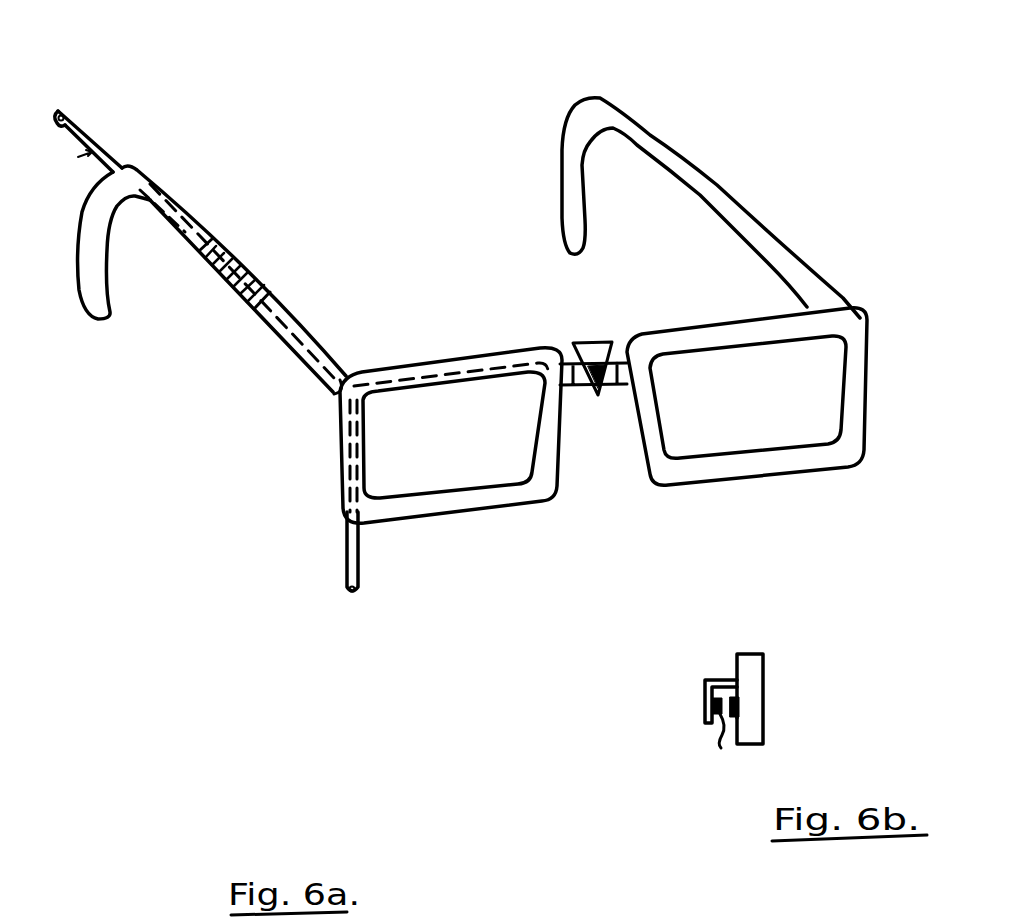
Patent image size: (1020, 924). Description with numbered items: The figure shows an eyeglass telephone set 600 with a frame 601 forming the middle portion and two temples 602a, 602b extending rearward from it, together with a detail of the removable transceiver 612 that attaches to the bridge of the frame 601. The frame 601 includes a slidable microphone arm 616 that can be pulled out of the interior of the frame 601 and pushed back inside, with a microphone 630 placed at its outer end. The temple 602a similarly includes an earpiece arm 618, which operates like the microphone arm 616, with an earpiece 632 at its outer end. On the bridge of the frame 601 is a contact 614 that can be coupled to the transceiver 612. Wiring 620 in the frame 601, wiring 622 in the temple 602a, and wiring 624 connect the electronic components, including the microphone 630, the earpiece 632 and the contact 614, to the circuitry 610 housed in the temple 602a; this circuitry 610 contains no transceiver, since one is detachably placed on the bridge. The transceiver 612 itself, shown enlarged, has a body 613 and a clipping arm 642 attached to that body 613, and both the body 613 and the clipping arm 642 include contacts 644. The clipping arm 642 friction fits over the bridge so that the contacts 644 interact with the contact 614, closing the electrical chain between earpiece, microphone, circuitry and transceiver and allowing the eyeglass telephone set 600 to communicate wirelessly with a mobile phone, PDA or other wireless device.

In FIG. 6A, the eyeglass telephone set 600 is at (800, 60).
In FIG. 6A, the frame 601 is at (814, 470).
In FIG. 6A, the temple 602a is at (213, 237).
In FIG. 6A, the temple 602b is at (733, 197).
In FIG. 6A, the circuitry 610 is at (232, 288).
In FIG. 6A, the transceiver 612 is at (593, 338).
In FIG. 6B, the transceiver 612 is at (762, 653).
In FIG. 6B, the body 613 is at (762, 718).
In FIG. 6A, the contact 614 is at (604, 396).
In FIG. 6A, the microphone arm 616 is at (360, 548).
In FIG. 6A, the earpiece arm 618 is at (100, 131).
In FIG. 6A, the wiring 620 is at (460, 352).
In FIG. 6A, the wiring 622 is at (195, 226).
In FIG. 6A, the wiring 624 is at (300, 357).
In FIG. 6A, the microphone 630 is at (358, 588).
In FIG. 6A, the earpiece 632 is at (66, 108).
In FIG. 6B, the clipping arm 642 is at (704, 678).
In FIG. 6B, the contacts 644 is at (728, 756).